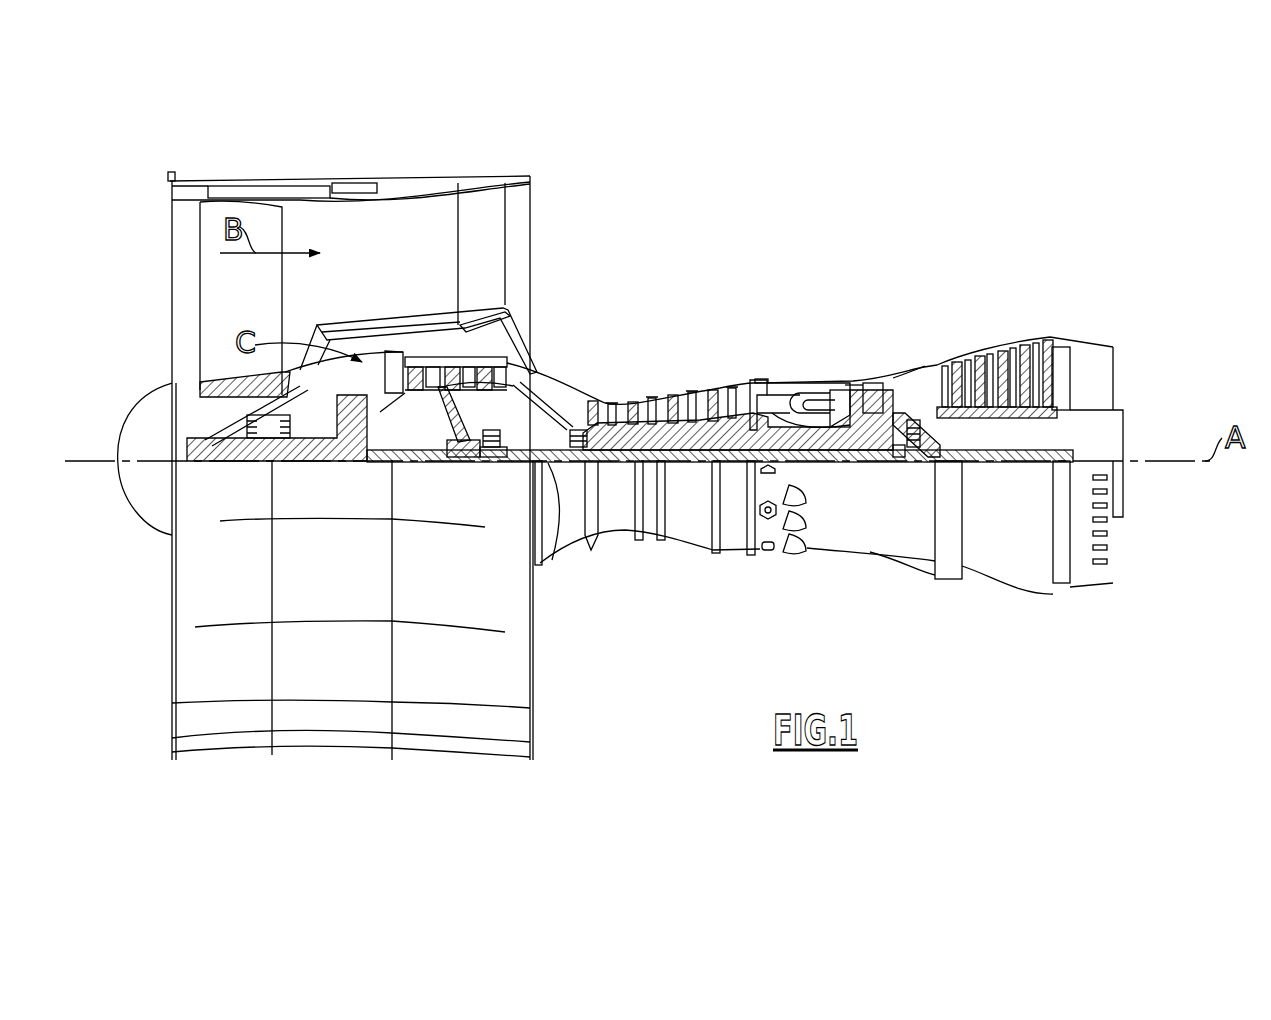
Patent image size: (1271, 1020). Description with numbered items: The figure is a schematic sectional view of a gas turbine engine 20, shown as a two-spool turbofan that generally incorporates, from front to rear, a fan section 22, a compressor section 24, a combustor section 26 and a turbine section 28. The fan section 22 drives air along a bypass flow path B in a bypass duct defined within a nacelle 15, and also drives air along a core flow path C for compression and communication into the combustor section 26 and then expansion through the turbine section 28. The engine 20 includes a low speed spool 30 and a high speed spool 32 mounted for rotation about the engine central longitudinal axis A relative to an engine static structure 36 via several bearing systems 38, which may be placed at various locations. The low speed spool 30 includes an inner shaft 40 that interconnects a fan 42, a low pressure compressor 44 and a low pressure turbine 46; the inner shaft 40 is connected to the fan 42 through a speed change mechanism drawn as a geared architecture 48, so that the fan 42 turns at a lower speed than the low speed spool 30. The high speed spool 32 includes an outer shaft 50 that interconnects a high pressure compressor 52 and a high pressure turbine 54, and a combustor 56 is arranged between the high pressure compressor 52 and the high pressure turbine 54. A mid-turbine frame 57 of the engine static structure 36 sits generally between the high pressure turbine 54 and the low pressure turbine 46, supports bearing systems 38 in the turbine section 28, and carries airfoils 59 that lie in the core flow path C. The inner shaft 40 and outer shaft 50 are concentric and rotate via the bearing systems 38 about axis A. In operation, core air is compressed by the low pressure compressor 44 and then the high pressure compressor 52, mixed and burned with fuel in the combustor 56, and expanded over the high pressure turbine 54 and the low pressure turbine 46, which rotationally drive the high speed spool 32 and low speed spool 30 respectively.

The nacelle 15 is at (354, 185).
The gas turbine engine 20 is at (812, 232).
The fan section 22 is at (282, 172).
The compressor section 24 is at (583, 372).
The combustor section 26 is at (805, 360).
The turbine section 28 is at (997, 336).
The low speed spool 30 is at (690, 467).
The high speed spool 32 is at (735, 400).
The engine static structure 36 is at (730, 550).
The bearing systems 38 is at (490, 455).
The inner shaft 40 is at (553, 462).
The fan 42 is at (255, 306).
The low pressure compressor 44 is at (447, 377).
The low pressure turbine 46 is at (1002, 345).
The geared architecture 48 is at (357, 448).
The outer shaft 50 is at (815, 462).
The high pressure compressor 52 is at (663, 420).
The high pressure turbine 54 is at (873, 387).
The combustor 56 is at (807, 403).
The mid-turbine frame 57 is at (913, 370).
The airfoils 59 is at (927, 397).